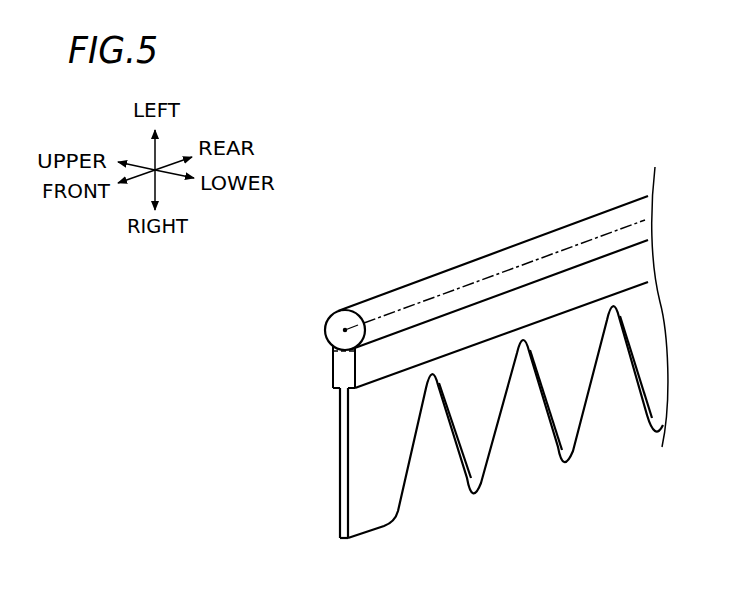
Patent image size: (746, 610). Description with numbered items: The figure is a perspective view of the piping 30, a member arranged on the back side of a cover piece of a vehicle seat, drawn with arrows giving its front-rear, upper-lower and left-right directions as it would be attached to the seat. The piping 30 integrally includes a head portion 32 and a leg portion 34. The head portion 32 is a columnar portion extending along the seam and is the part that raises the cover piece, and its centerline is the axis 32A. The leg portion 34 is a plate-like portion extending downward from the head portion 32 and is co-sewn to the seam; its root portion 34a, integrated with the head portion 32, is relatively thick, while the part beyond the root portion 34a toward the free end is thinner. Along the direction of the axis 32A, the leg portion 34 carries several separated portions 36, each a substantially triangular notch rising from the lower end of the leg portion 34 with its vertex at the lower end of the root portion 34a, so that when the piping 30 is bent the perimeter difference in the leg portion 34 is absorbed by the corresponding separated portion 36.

The piping 30 is at (340, 236).
The head portion 32 is at (440, 285).
The axis of the head portion 32A is at (540, 260).
The leg portion 34 is at (343, 433).
The root portion 34a is at (343, 368).
The separated portion 36 is at (458, 472).